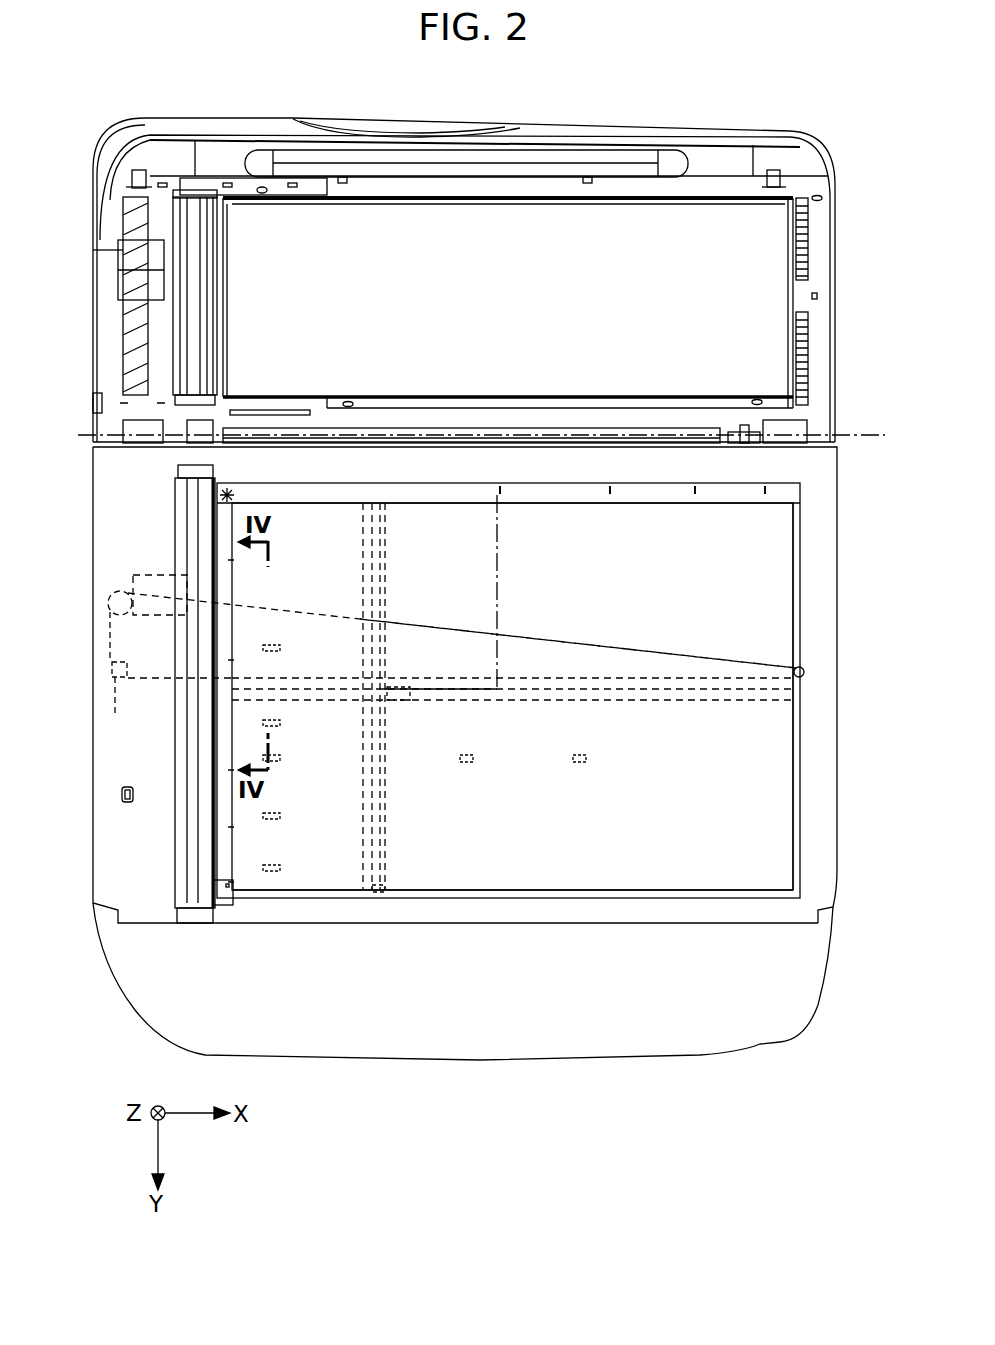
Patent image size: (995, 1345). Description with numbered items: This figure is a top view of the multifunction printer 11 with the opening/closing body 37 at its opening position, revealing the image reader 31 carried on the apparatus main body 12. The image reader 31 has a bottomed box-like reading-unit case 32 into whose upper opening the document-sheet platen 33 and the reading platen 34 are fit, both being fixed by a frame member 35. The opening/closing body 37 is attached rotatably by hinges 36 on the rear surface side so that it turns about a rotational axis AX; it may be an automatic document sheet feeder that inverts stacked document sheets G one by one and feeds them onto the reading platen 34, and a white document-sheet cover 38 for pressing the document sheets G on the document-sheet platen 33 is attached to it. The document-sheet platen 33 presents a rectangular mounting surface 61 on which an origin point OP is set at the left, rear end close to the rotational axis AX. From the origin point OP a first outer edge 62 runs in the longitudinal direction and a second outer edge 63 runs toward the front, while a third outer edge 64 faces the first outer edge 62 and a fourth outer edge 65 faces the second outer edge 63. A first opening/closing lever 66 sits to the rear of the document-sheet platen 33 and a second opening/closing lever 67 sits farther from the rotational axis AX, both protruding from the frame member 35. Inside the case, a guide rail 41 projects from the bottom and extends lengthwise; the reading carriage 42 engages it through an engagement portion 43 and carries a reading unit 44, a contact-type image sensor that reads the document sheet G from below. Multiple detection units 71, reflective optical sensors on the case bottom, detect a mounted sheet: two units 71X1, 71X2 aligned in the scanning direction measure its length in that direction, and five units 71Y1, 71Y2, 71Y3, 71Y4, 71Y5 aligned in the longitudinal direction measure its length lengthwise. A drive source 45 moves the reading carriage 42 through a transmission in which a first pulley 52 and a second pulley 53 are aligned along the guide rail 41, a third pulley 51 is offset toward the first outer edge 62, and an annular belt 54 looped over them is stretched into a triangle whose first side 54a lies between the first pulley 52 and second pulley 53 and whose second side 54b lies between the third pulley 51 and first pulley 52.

The image reading apparatus 11 is at (778, 112).
The apparatus main body 12 is at (120, 950).
The image reader 31 is at (890, 753).
The reading-unit case 32 is at (568, 880).
The document-sheet platen 33 is at (678, 895).
The reading platen 34 is at (190, 513).
The frame member 35 is at (823, 535).
The hinges 36 is at (790, 425).
The opening/closing body 37 is at (693, 128).
The white document-sheet cover 38 is at (778, 292).
The guide rail 41 is at (670, 702).
The reading carriage 42 is at (388, 562).
The engagement portion 43 is at (398, 708).
The reading unit 44 is at (383, 598).
The drive source 45 is at (155, 572).
The third pulley 51 is at (108, 600).
The first pulley 52 is at (806, 672).
The second pulley 53 is at (115, 700).
The belt 54 is at (105, 656).
The first side 54a is at (398, 682).
The second side 54b is at (607, 640).
The mounting surface 61 is at (432, 512).
The first outer edge 62 is at (627, 518).
The second outer edge 63 is at (240, 893).
The third outer edge 64 is at (505, 880).
The fourth outer edge 65 is at (790, 887).
The first opening/closing lever 66 is at (745, 423).
The second opening/closing lever 67 is at (128, 805).
The detection units 71 is at (490, 827).
The detection unit 71X1 is at (467, 765).
The detection unit 71X2 is at (579, 765).
The detection unit 71Y1 is at (282, 648).
The detection unit 71Y2 is at (282, 723).
The detection unit 71Y3 is at (282, 758).
The detection unit 71Y4 is at (282, 816).
The detection unit 71Y5 is at (282, 868).
The document sheet G is at (500, 607).
The origin point OP is at (232, 497).
The rotational axis AX is at (865, 445).